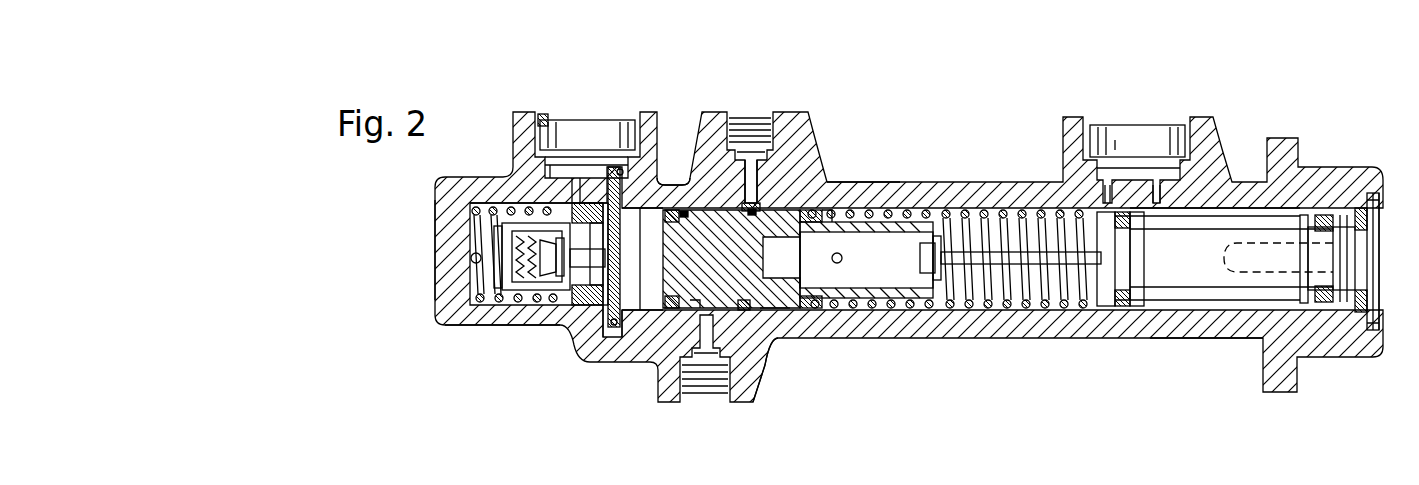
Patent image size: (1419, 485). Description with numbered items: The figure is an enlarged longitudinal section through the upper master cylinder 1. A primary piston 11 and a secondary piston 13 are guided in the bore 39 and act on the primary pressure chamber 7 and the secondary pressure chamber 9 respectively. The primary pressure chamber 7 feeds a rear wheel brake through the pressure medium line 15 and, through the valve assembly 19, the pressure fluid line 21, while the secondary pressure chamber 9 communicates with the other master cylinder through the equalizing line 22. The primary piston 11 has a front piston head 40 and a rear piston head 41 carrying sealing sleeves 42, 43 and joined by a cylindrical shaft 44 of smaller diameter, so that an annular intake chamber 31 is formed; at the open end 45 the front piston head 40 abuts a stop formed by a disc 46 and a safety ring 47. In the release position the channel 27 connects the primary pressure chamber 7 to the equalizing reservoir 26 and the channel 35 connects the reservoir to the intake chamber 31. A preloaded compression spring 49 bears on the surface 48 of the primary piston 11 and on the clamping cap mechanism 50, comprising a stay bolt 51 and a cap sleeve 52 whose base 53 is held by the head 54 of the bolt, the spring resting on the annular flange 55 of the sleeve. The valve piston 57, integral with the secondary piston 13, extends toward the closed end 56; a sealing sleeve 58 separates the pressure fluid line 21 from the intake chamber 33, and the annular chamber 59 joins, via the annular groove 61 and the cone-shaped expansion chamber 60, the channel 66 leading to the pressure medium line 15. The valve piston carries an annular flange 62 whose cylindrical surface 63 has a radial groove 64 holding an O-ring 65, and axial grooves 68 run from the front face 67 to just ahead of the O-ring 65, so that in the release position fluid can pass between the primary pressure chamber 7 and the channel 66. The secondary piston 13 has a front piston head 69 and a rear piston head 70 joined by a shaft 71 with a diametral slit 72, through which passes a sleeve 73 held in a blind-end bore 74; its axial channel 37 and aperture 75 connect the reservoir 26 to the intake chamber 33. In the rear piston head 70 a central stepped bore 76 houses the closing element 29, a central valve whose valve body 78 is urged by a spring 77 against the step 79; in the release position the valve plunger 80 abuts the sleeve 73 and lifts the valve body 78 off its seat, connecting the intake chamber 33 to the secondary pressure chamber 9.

The master cylinder 1 is at (482, 126).
The primary pressure chamber 7 is at (998, 305).
The secondary pressure chamber 9 is at (480, 306).
The primary piston 11 is at (1228, 220).
The secondary piston 13 is at (540, 295).
The pressure medium line 15 is at (751, 118).
The valve assembly 19 is at (787, 322).
The pressure fluid line 21 is at (705, 400).
The equalizing line 22 is at (470, 258).
The equalizing reservoir 26 is at (585, 122).
The channel 27 is at (1107, 200).
The closing element 29 is at (510, 245).
The intake chamber 31 is at (1196, 222).
The intake chamber 33 is at (655, 225).
The channel 35 is at (1157, 195).
The channel 37 is at (588, 322).
The bore 39 is at (1200, 312).
The front piston head 40 is at (1346, 320).
The rear piston head 41 is at (1142, 305).
The sealing sleeve 42 is at (1325, 320).
The sealing sleeve 43 is at (1116, 306).
The cylindrical shaft 44 is at (1172, 272).
The open end 45 is at (1375, 212).
The disc 46 is at (1361, 228).
The safety ring 47 is at (1374, 322).
The surface 48 is at (1085, 292).
The compression spring 49 is at (832, 306).
The clamping cap mechanism 50 is at (926, 286).
The stay bolt 51 is at (950, 287).
The cap sleeve 52 is at (870, 300).
The base 53 is at (890, 300).
The head 54 is at (915, 302).
The annular flange 55 is at (835, 211).
The closed end 56 is at (437, 327).
The valve piston 57 is at (808, 205).
The sealing sleeve 58 is at (684, 210).
The annular chamber 59 is at (690, 306).
The cone-shaped expansion chamber 60 is at (742, 310).
The annular groove 61 is at (752, 308).
The annular flange 62 is at (690, 207).
The cylindrical surface 63 is at (762, 205).
The radial groove 64 is at (776, 308).
The O-ring 65 is at (766, 310).
The channel 66 is at (740, 200).
The front face 67 is at (818, 308).
The axial grooves 68 is at (825, 207).
The front piston head 69 is at (673, 182).
The rear piston head 70 is at (553, 118).
The shaft 71 is at (630, 312).
The diametral slit 72 is at (618, 172).
The sleeve 73 is at (604, 222).
The blind-end bore 74 is at (598, 302).
The aperture 75 is at (612, 330).
The central stepped bore 76 is at (545, 292).
The spring 77 is at (512, 300).
The valve body 78 is at (530, 262).
The step 79 is at (576, 205).
The valve plunger 80 is at (563, 300).